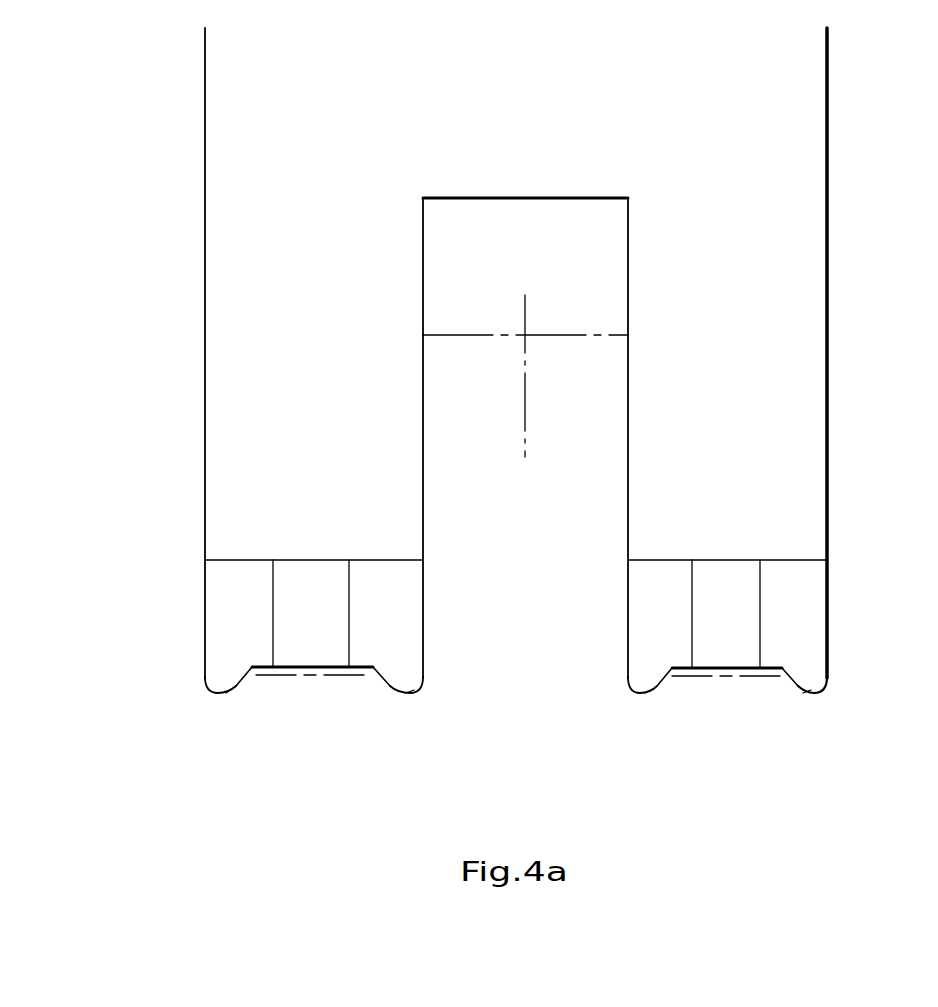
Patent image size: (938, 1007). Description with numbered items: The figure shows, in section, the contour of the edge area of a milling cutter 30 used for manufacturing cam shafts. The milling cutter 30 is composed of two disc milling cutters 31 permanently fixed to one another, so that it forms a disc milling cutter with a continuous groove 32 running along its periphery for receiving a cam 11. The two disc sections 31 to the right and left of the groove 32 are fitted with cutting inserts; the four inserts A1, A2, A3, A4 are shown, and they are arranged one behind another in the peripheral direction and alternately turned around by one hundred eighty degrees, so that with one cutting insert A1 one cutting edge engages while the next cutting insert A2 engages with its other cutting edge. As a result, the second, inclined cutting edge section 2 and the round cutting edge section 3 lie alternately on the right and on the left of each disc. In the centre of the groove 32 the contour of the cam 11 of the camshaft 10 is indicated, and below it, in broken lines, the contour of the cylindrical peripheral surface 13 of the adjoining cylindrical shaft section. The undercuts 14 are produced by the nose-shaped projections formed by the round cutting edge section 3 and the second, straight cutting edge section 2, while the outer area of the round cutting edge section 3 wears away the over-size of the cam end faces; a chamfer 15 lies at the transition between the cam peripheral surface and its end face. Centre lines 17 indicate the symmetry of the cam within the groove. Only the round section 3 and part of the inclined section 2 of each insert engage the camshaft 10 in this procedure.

The milling cutter 30 is at (874, 246).
The disc milling cutter 31 is at (216, 473).
The groove 32 is at (608, 295).
The cam 11 is at (600, 473).
The chamfer 15 is at (427, 330).
The longitudinal center line 17 is at (485, 333).
The camshaft 10 is at (638, 619).
The cylindrical peripheral surface 13 is at (340, 678).
The undercut 14 is at (230, 704).
The second, inclined cutting edge section 2 is at (238, 681).
The round cutting edge section 3 is at (213, 692).
The cutting insert A1 is at (408, 616).
The cutting insert A2 is at (223, 603).
The cutting insert A3 is at (638, 667).
The cutting insert A4 is at (810, 628).